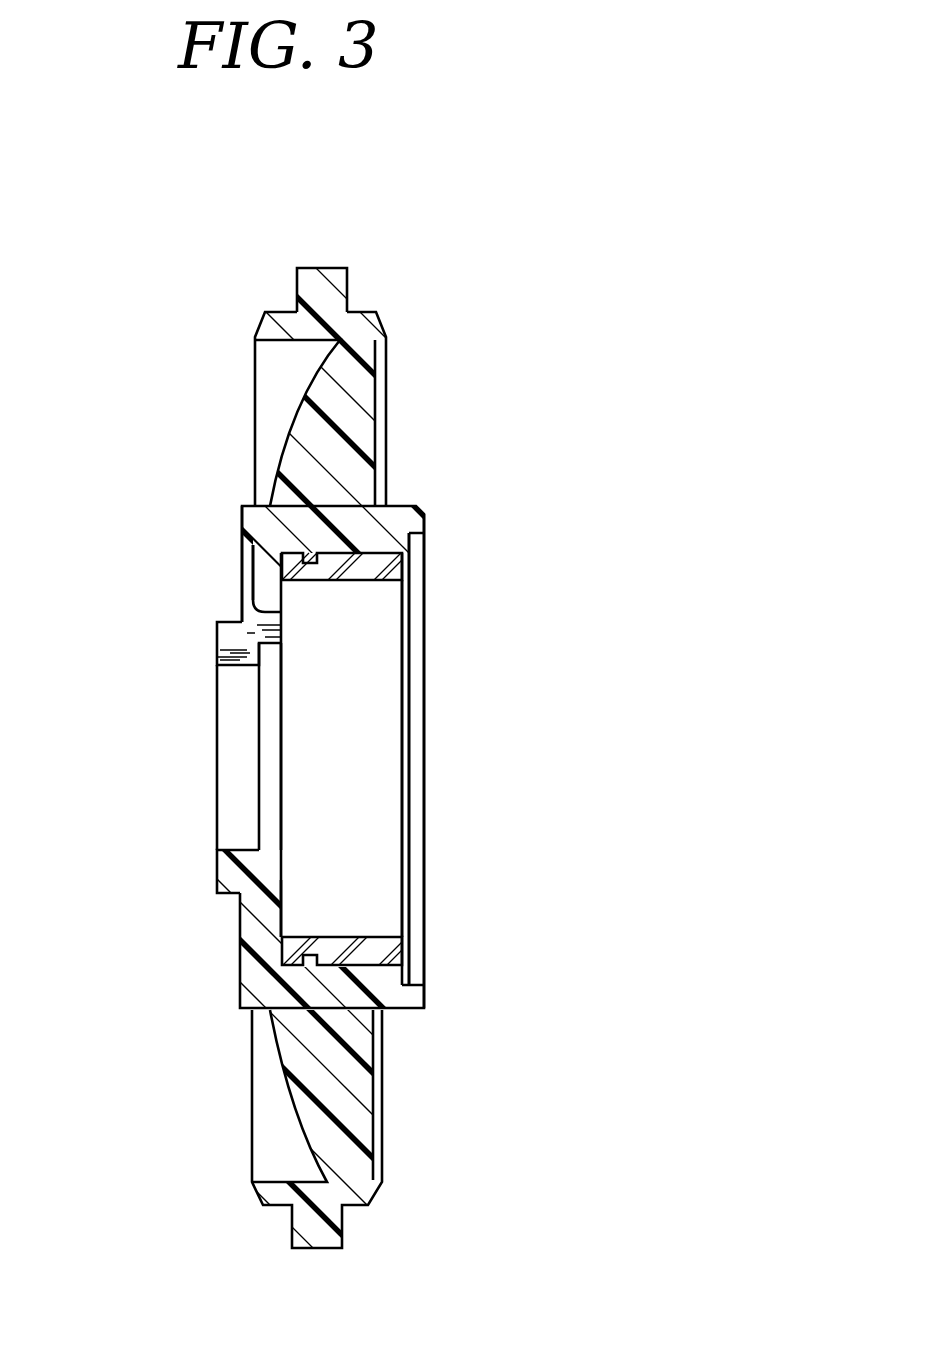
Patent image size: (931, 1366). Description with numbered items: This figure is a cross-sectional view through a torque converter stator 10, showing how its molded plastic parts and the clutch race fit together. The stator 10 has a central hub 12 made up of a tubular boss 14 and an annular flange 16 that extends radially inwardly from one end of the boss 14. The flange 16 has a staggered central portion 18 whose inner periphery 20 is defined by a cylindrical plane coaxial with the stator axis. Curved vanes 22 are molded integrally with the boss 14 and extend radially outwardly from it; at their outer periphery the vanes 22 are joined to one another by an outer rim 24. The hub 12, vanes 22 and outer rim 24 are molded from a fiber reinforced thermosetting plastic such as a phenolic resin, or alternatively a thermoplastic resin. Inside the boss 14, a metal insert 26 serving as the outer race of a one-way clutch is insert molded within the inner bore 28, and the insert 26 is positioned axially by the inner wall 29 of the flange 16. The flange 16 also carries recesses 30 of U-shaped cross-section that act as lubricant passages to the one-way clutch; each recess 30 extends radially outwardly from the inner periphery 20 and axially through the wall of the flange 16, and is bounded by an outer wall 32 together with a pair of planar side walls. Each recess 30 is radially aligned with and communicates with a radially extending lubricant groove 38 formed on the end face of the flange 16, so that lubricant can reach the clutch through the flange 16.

The torque converter stator 10 is at (512, 262).
The central hub 12 is at (220, 1002).
The tubular boss 14 is at (387, 1012).
The annular flange 16 is at (243, 925).
The staggered central portion 18 is at (230, 865).
The inner periphery 20 is at (228, 849).
The curved vanes 22 is at (358, 423).
The outer rim 24 is at (358, 328).
The metal insert 26 is at (378, 566).
The inner bore 28 is at (350, 966).
The inner wall 29 is at (282, 910).
The recesses 30 is at (253, 635).
The outer wall 32 is at (240, 612).
The lubricant groove 38 is at (248, 570).